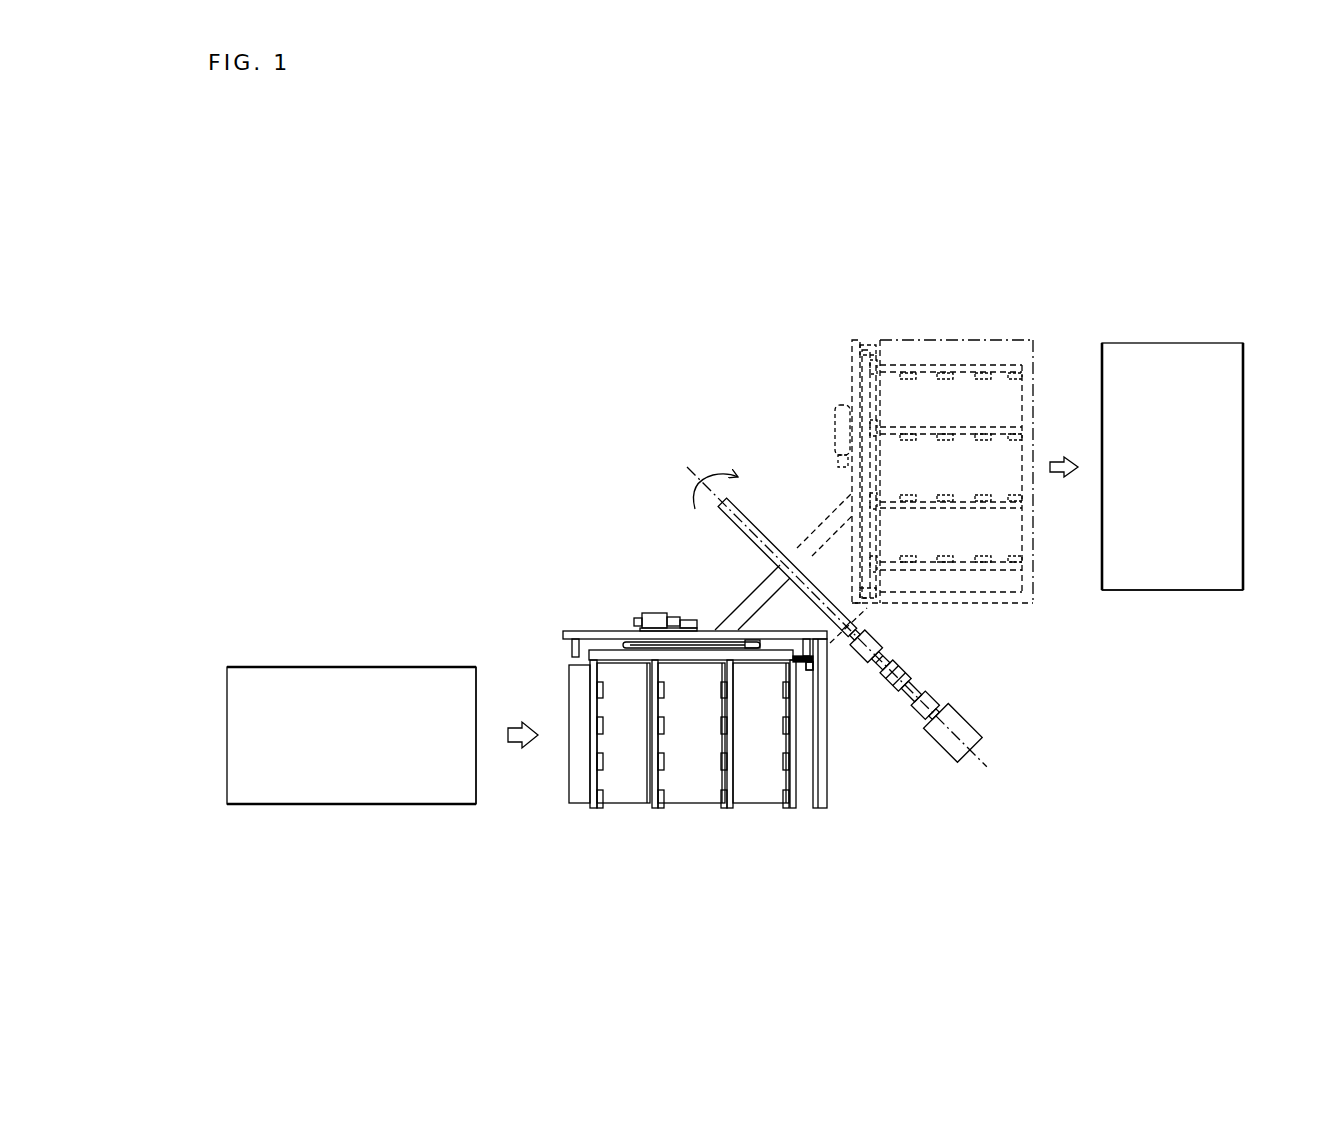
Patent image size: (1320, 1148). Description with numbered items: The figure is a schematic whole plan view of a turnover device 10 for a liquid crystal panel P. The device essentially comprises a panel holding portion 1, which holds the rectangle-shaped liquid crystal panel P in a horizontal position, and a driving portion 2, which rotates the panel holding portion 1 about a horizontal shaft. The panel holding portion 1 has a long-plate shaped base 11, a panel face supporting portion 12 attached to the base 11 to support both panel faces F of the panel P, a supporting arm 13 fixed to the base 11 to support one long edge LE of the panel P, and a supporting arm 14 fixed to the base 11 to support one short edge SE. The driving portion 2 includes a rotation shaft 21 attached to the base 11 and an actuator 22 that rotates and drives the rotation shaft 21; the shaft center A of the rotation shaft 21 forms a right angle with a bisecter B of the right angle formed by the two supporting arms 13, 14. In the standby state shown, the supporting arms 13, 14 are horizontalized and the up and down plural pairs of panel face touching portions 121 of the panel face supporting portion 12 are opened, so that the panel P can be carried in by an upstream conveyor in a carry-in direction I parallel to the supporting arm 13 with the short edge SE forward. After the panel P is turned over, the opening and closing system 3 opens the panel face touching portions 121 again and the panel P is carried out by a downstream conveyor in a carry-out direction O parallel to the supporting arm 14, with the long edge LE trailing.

The turnover device 10 is at (607, 502).
The panel holding portion 1 is at (603, 613).
The base 11 is at (571, 630).
The panel face supporting portion 12 is at (588, 697).
The panel face touching portions 121 is at (603, 796).
The supporting arm 13 is at (569, 660).
The supporting arm 14 is at (822, 808).
The opening and closing system 3 is at (654, 606).
The driving portion 2 is at (901, 737).
The rotation shaft 21 is at (749, 512).
The actuator 22 is at (961, 718).
The shaft center A is at (1003, 747).
The bisecter B is at (806, 669).
The liquid crystal panel P is at (326, 808).
The long edge LE is at (402, 666).
The short edge SE is at (477, 783).
The panel face F is at (409, 787).
The carry-in direction I is at (523, 746).
The carry-out direction O is at (1064, 484).